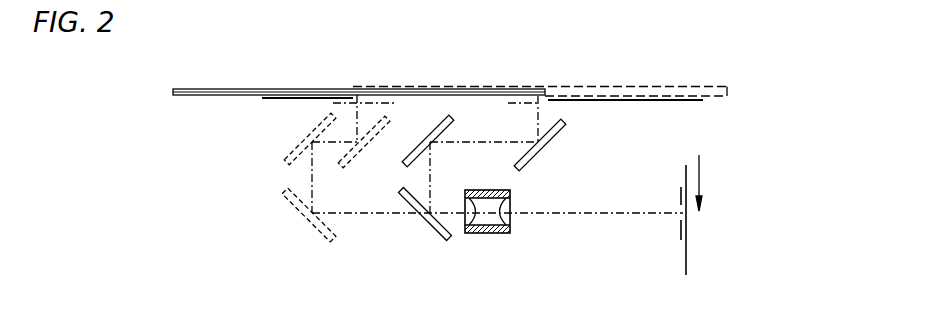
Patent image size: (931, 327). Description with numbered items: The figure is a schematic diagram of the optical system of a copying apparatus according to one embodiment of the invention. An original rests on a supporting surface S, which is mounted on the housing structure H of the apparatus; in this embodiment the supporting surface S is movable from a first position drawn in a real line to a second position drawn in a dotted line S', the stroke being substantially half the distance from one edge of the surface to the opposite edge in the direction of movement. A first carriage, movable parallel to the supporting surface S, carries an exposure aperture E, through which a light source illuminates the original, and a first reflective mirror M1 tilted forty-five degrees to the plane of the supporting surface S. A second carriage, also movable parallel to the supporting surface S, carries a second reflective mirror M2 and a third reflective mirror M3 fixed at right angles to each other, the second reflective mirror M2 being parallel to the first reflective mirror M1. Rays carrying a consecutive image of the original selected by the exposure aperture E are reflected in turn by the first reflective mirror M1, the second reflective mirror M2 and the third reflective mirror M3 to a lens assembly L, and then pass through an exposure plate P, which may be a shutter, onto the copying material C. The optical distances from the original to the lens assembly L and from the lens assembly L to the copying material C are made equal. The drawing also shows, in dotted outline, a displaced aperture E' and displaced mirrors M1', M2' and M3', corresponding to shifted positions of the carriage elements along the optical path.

The supporting surface S is at (359, 76).
The second position of supporting surface S' is at (540, 76).
The housing structure H is at (662, 101).
The exposure aperture E is at (556, 118).
The entrance aperture (second path) E' is at (329, 114).
The first reflective mirror M1 is at (550, 145).
The second reflective mirror M2 is at (427, 139).
The third reflective mirror M3 is at (424, 234).
The mirror (second path) M1' is at (371, 146).
The mirror (second path) M2' is at (283, 139).
The mirror (second path) M3' is at (305, 234).
The lens assembly L is at (497, 235).
The exposure plate P is at (681, 230).
The copying material C is at (687, 262).